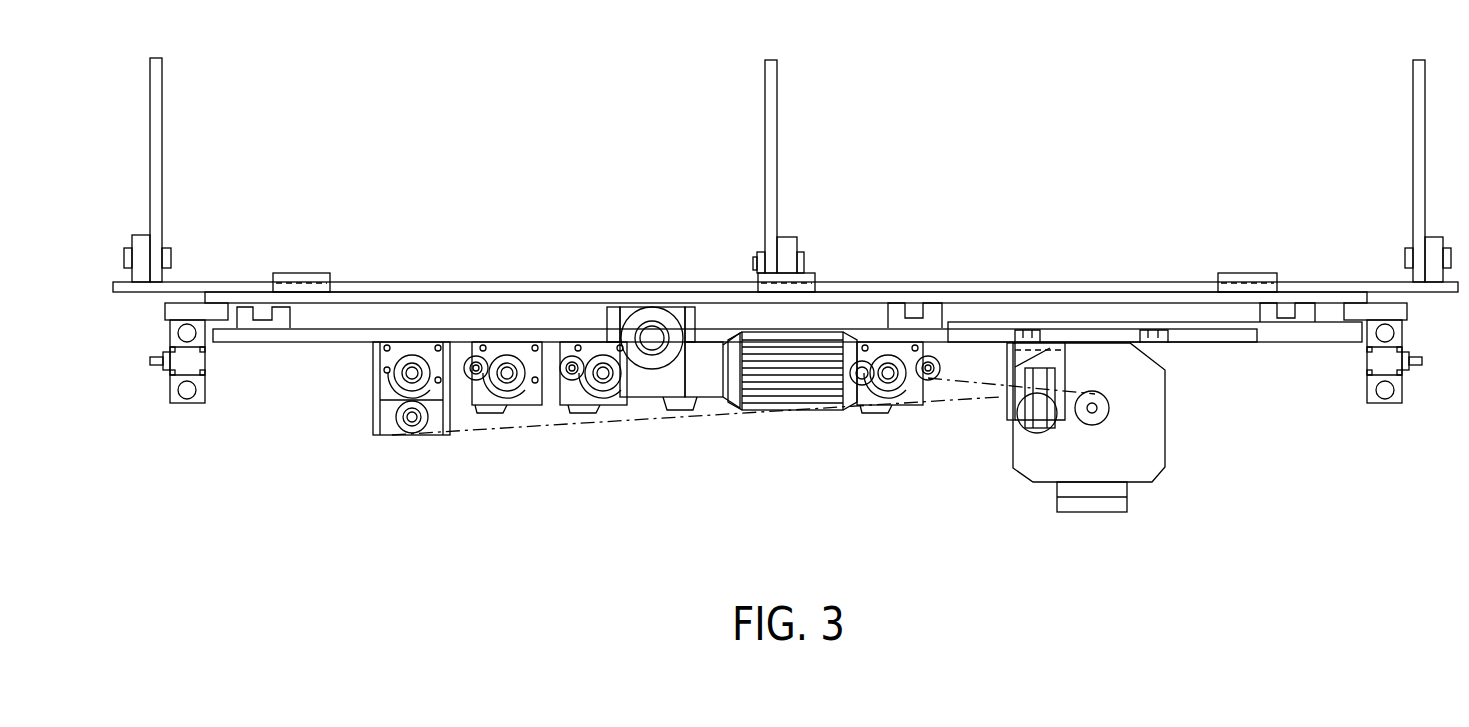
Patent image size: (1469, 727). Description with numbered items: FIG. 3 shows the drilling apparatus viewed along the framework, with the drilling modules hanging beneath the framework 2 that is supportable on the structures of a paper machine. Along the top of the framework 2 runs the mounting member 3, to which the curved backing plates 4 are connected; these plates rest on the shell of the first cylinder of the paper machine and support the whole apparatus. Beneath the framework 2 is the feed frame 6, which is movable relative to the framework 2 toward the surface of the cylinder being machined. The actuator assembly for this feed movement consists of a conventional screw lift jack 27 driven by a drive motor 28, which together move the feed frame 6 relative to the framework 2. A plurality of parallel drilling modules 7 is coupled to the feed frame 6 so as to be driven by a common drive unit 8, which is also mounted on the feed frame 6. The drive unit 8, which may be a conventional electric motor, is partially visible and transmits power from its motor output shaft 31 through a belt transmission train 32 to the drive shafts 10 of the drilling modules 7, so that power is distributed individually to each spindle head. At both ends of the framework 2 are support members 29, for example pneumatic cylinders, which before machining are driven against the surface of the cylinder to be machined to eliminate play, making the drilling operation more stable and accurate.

The framework 2 is at (366, 303).
The mounting member 3 is at (234, 282).
The curved backing plate 4 is at (162, 123).
The feed frame 6 is at (255, 330).
The drilling module 7 is at (428, 445).
The drive unit 8 is at (1127, 437).
The drive shaft 10 is at (898, 385).
The screw lift jack 27 is at (640, 317).
The drive motor 28 is at (800, 357).
The support member 29 is at (187, 359).
The motor output shaft 31 is at (1100, 395).
The belt transmission train 32 is at (965, 400).